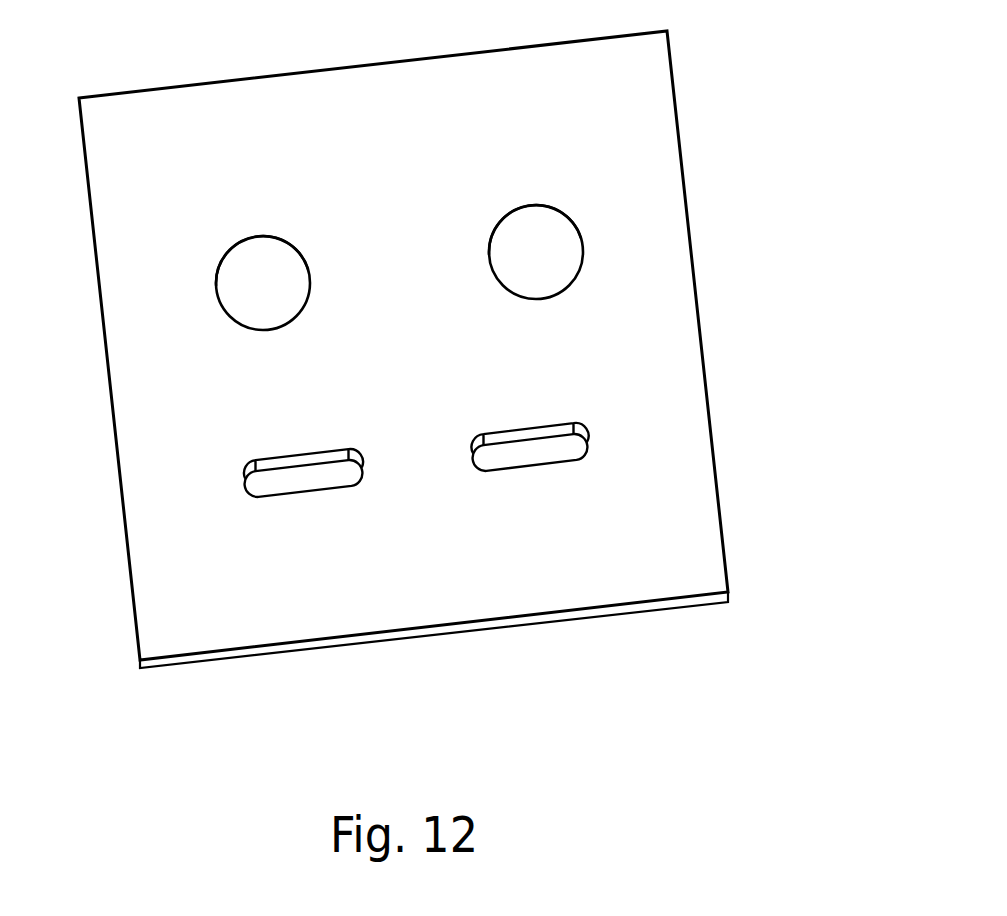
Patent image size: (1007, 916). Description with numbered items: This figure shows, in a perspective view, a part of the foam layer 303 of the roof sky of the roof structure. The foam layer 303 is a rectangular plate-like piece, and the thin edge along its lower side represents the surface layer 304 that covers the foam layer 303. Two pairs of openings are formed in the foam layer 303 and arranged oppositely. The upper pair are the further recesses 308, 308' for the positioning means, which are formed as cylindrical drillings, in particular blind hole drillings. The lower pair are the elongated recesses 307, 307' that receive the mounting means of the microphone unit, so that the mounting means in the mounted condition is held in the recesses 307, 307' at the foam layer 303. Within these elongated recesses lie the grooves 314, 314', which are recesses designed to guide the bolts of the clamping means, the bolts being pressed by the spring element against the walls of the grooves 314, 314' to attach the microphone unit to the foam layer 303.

The foam layer 303 is at (398, 575).
The surface layer 304 is at (222, 661).
The recess 307 is at (187, 518).
The recess 307' is at (654, 469).
The further recess 308 is at (161, 319).
The further recess 308' is at (664, 268).
The groove 314 is at (292, 606).
The groove 314' is at (505, 576).